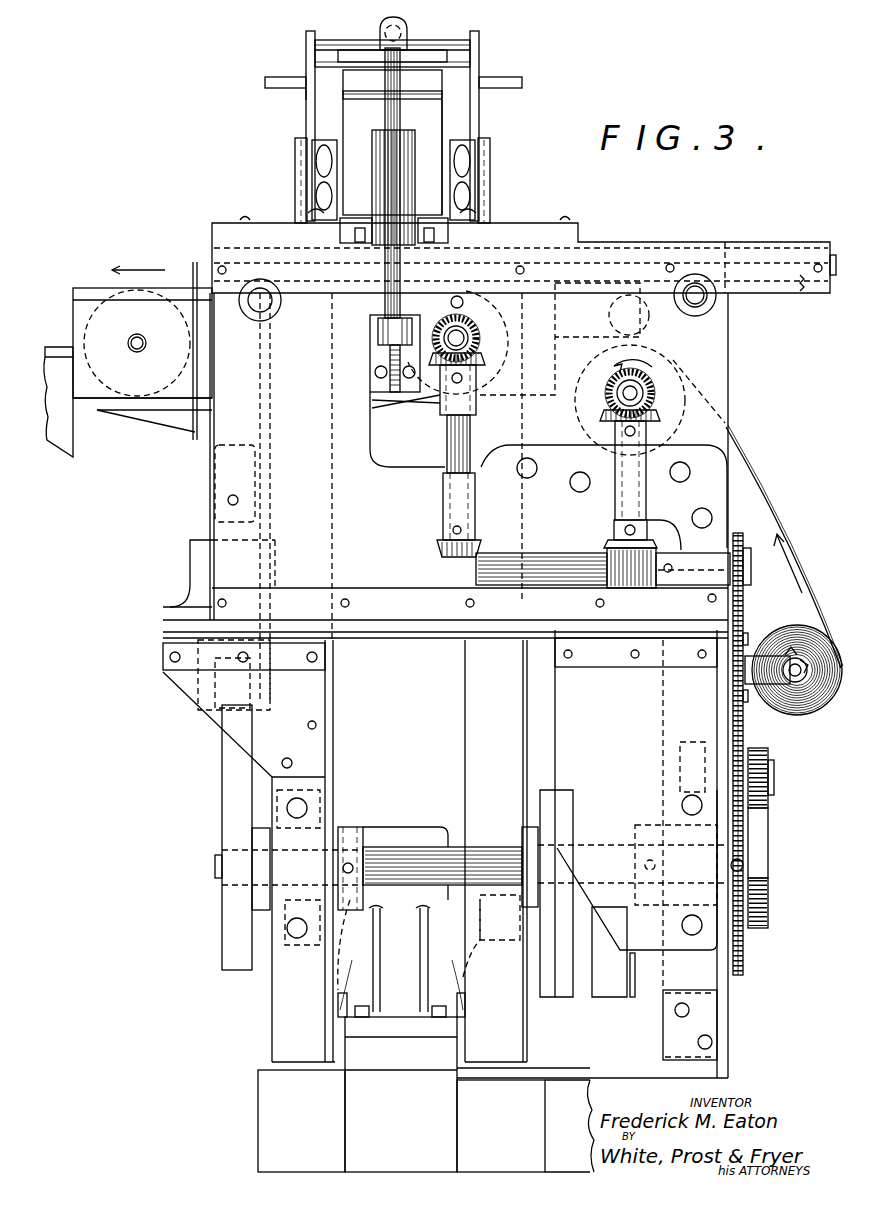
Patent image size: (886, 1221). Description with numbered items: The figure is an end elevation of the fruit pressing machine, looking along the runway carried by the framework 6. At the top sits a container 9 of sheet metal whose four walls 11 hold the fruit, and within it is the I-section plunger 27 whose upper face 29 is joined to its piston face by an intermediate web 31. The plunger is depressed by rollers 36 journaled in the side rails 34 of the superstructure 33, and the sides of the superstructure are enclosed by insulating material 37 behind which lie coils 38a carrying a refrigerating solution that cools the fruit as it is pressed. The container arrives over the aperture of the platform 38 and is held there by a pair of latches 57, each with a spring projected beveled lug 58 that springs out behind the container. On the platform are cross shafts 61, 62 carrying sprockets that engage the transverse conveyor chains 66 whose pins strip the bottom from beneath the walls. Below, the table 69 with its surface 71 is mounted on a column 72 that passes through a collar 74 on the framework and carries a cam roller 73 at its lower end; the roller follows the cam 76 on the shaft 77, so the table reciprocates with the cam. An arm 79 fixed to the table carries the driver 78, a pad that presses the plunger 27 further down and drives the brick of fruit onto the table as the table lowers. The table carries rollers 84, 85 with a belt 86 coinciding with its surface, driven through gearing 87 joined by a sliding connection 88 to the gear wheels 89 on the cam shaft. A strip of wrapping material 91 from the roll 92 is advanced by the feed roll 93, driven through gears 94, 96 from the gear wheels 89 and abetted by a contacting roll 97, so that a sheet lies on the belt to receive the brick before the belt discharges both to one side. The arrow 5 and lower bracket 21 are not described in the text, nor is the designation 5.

The direction arrow 5 is at (385, 110).
The framework 6 is at (604, 630).
The container 9 is at (450, 180).
The walls 11 is at (334, 190).
The lower bracket 21 is at (399, 851).
The plunger 27 is at (343, 105).
The upper face 29 is at (430, 84).
The intermediate web 31 is at (440, 128).
The superstructure 33 is at (303, 95).
The side rails 34 is at (308, 40).
The rollers 36 is at (430, 45).
The insulating material 37 is at (298, 198).
The platform 38 is at (322, 160).
The coils 38a is at (466, 195).
The latches 57 is at (240, 230).
The spring projected beveled lug 58 is at (340, 236).
The cross shaft 61 is at (265, 300).
The cross shaft 62 is at (700, 297).
The conveyor chains 66 is at (380, 315).
The table 69 is at (135, 410).
The surface 71 is at (190, 295).
The column 72 is at (210, 492).
The cam roller 73 is at (210, 729).
The collar 74 is at (190, 582).
The cam 76 is at (230, 792).
The shaft 77 is at (395, 858).
The driver 78 is at (382, 30).
The arm 79 is at (390, 118).
The roller 84 is at (495, 365).
The roller 85 is at (93, 342).
The belt 86 is at (177, 285).
The gearing 87 is at (480, 340).
The sliding connection 88 is at (460, 445).
The gear wheels 89 is at (450, 560).
The wrapping material 91 is at (745, 460).
The roll 92 is at (788, 640).
The feed roll 93 is at (672, 386).
The gear 94 is at (635, 575).
The gear 96 is at (645, 395).
The contacting roll 97 is at (607, 318).